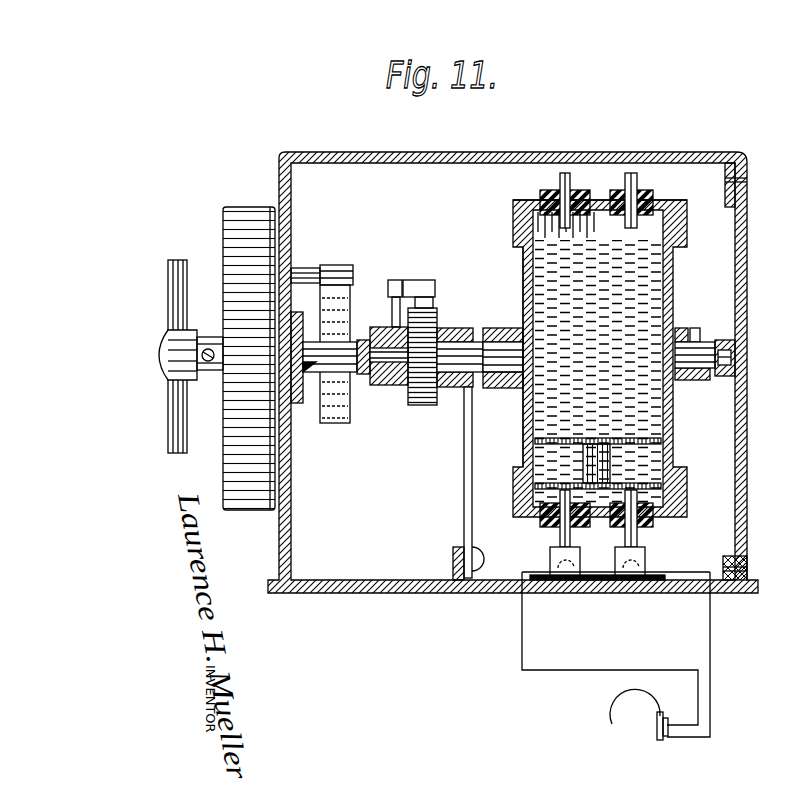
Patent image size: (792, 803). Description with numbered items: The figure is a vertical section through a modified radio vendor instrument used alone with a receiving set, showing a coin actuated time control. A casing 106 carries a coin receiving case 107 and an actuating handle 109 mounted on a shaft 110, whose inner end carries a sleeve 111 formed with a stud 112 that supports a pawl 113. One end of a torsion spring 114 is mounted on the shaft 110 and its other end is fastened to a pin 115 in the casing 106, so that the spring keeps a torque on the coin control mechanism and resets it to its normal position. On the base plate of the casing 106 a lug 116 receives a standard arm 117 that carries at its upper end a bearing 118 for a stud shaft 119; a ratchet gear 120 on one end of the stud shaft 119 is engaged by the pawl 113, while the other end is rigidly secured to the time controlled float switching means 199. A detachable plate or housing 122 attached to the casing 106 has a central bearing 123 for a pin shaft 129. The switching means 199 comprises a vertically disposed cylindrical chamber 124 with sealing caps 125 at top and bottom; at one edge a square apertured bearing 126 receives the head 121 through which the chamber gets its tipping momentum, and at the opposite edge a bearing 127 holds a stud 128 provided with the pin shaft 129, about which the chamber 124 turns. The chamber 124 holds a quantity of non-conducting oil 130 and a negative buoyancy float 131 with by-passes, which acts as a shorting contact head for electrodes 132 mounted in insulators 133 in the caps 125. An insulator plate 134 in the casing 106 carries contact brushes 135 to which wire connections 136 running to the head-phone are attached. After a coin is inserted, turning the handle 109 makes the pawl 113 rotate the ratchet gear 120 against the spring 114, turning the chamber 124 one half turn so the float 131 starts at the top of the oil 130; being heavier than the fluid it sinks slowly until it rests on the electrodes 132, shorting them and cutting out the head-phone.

The casing 106 is at (522, 151).
The coin receiving case 107 is at (222, 211).
The actuating handle 109 is at (168, 310).
The shaft 110 is at (325, 372).
The sleeve 111 is at (386, 388).
The stud 112 is at (393, 278).
The pawl 113 is at (424, 290).
The torsion spring 114 is at (333, 423).
The pin 115 is at (306, 280).
The lug 116 is at (453, 552).
The standard arm 117 is at (464, 470).
The bearing 118 is at (459, 328).
The stud shaft 119 is at (455, 388).
The ratchet gear 120 is at (418, 405).
The head 121 is at (497, 340).
The detachable plate or housing 122 is at (735, 237).
The bearing 123 is at (727, 380).
The chamber 124 is at (530, 442).
The sealing caps 125 is at (683, 208).
The square apertured bearing 126 is at (503, 397).
The bearing 127 is at (680, 330).
The stud 128 is at (700, 350).
The pin shaft 129 is at (745, 335).
The oil 130 is at (523, 232).
The negative buoyancy float 131 is at (583, 455).
The electrodes 132 is at (636, 170).
The insulators 133 is at (611, 190).
The insulator plate 134 is at (607, 583).
The contact brushes 135 is at (569, 583).
The wire connections 136 is at (522, 628).
The time controlled float switching means 199 is at (527, 265).